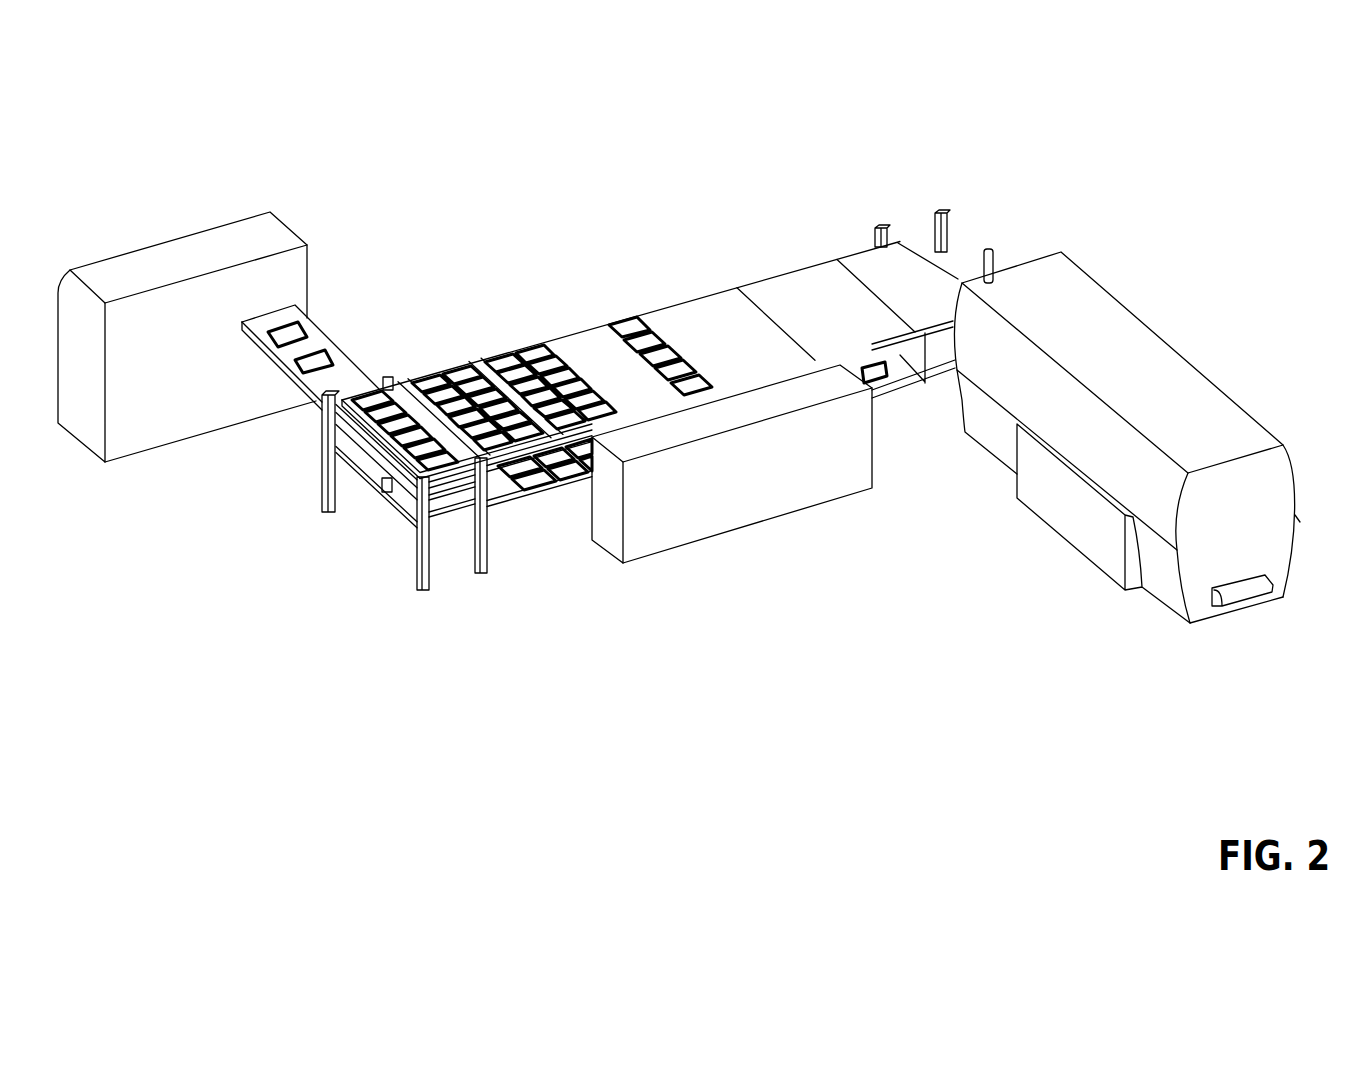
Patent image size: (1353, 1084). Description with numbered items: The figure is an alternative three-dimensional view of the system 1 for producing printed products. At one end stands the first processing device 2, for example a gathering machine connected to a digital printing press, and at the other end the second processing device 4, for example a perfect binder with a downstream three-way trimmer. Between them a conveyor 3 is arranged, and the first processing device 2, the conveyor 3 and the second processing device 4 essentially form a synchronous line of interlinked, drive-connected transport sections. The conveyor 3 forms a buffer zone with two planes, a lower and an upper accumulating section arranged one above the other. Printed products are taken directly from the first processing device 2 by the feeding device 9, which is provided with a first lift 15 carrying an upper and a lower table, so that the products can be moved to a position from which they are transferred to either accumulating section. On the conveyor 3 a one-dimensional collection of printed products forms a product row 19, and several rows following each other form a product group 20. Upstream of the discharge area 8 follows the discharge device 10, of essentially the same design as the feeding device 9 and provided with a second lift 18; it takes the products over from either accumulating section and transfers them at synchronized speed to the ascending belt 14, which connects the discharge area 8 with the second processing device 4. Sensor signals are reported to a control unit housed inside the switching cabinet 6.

The system 1 is at (647, 270).
The first processing device 2 is at (1236, 400).
The conveyor 3 is at (785, 270).
The second processing device 4 is at (290, 228).
The switching cabinet 6 is at (853, 458).
The discharge area 8 is at (322, 428).
The feeding device 9 is at (966, 250).
The discharge device 10 is at (395, 500).
The ascending belt 14 is at (313, 343).
The first lift 15 is at (947, 227).
The second lift 18 is at (322, 484).
The product row 19 is at (440, 473).
The product group 20 is at (555, 355).